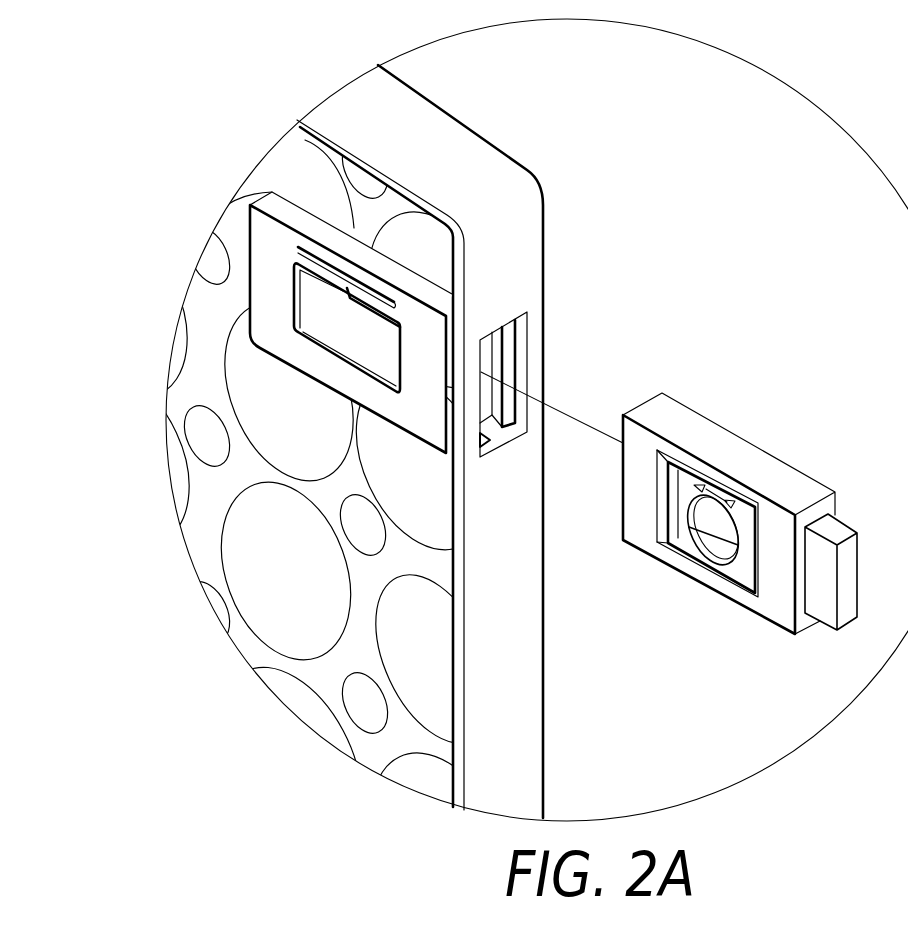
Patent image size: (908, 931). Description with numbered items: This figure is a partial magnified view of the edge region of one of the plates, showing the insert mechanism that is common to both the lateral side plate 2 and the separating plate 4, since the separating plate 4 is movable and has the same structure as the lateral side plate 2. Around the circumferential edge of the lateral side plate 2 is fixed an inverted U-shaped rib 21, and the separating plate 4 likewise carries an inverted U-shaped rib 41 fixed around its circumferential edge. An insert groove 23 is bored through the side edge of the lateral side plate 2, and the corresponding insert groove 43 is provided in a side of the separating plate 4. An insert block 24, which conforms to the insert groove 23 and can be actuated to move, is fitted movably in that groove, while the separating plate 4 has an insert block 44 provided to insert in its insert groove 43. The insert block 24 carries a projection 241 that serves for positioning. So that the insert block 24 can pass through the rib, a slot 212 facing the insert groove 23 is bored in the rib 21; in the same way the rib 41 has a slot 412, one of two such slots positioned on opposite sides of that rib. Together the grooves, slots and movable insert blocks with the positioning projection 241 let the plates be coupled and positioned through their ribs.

The lateral side plate 2 is at (279, 531).
The separating plate 4 is at (213, 480).
The inverted U-shaped rib 21 is at (454, 465).
The inverted U-shaped rib 41 is at (375, 117).
The insert groove 23 is at (608, 454).
The insert groove 43 is at (608, 454).
The insert block 24 is at (743, 480).
The insert block 44 is at (727, 453).
The slot 212 is at (571, 539).
The slot 412 is at (495, 445).
The projection 241 is at (343, 291).